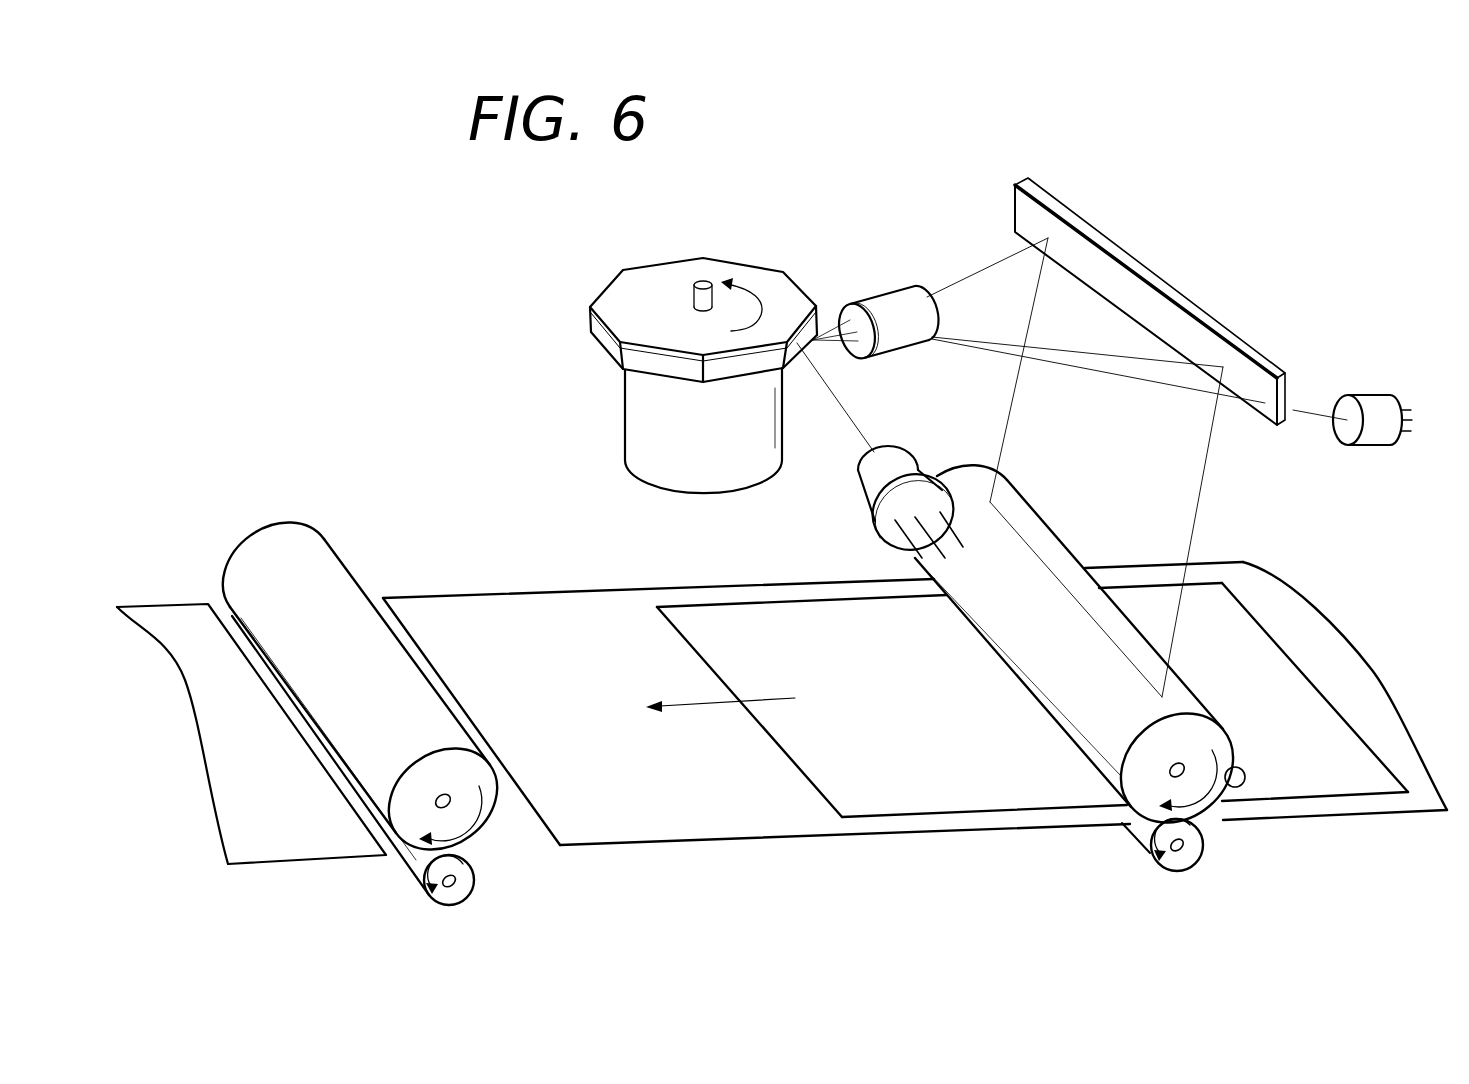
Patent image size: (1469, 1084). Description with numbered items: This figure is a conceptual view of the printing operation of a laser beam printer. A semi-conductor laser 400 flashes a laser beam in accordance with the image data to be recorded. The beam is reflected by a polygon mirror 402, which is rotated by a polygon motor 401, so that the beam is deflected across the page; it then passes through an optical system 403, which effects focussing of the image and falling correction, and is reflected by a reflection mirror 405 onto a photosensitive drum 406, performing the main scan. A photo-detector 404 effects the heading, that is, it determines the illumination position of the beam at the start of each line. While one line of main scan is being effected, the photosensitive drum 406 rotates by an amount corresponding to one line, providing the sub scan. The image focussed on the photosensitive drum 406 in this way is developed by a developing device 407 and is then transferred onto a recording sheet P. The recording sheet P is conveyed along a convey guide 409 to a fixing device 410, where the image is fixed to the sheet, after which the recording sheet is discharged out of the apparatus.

The semi-conductor laser 400 is at (856, 485).
The polygon motor 401 is at (642, 407).
The polygon mirror 402 is at (715, 256).
The optical system 403 is at (882, 301).
The photo-detector 404 is at (1377, 400).
The reflection mirror 405 is at (1163, 278).
The photosensitive drum 406 is at (1077, 715).
The developing device 407 is at (1247, 778).
The convey guide 409 is at (653, 828).
The fixing device 410 is at (267, 540).
The recording sheet P is at (937, 798).